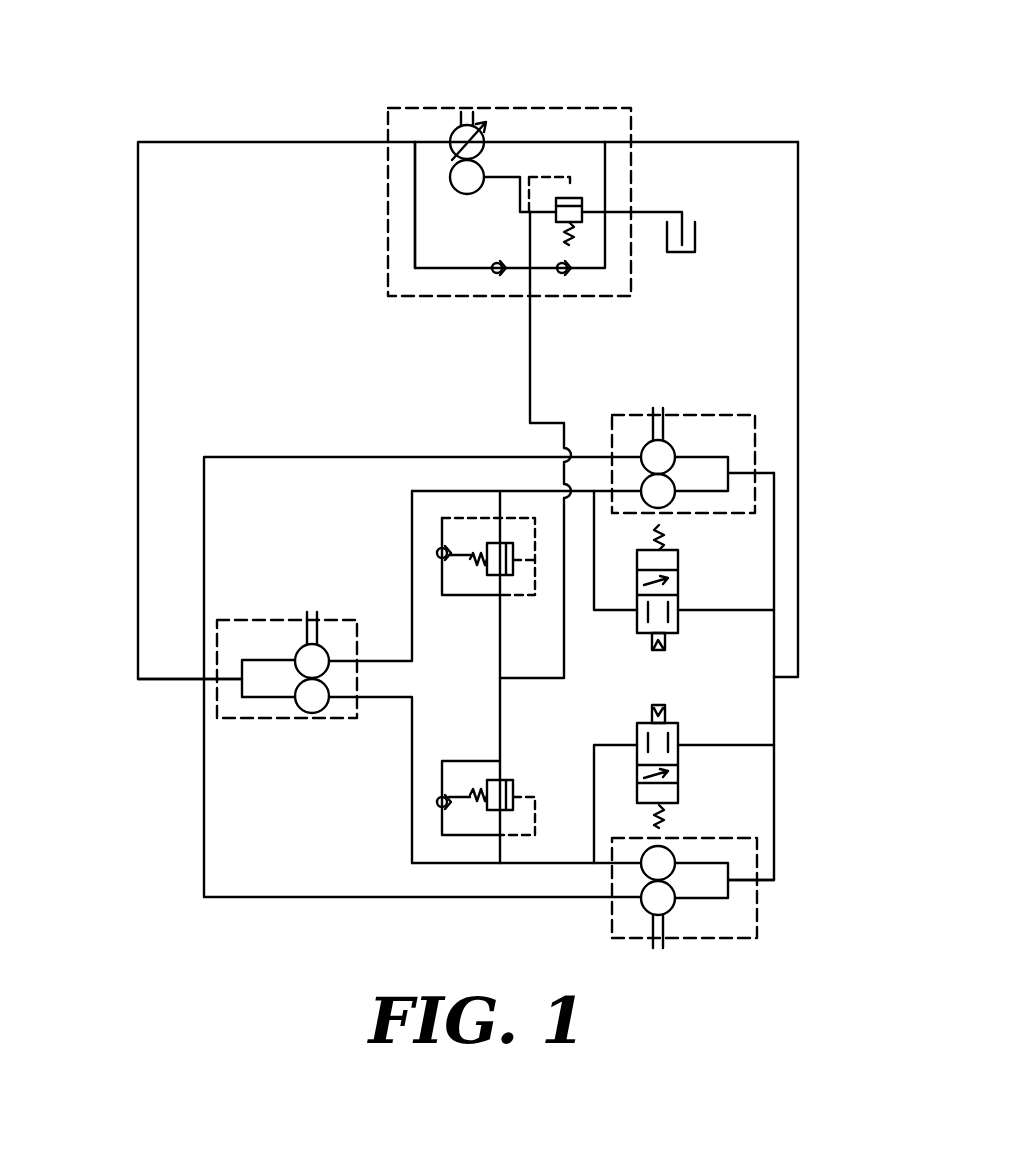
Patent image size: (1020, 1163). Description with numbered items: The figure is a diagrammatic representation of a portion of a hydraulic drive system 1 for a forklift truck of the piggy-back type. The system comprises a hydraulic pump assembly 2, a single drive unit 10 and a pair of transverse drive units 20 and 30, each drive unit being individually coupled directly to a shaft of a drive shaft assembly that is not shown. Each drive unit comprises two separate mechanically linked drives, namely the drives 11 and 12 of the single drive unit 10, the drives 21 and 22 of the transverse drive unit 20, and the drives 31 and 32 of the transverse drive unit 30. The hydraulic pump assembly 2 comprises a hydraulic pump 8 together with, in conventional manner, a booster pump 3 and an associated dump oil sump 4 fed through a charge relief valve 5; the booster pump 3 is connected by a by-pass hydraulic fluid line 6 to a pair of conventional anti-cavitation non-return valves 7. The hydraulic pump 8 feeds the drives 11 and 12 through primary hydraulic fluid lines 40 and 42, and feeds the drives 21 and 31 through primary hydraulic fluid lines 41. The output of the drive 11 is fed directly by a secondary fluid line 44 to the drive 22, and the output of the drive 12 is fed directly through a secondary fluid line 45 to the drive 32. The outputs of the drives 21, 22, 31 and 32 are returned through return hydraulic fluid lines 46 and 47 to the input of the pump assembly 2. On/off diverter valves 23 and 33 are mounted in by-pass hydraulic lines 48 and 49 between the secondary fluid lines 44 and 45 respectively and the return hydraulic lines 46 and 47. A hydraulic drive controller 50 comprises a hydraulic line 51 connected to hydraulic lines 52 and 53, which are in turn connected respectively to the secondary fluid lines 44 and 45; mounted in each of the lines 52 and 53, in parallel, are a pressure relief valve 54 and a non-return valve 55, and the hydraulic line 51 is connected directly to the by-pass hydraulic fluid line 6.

The hydraulic drive system 1 is at (725, 102).
The hydraulic pump assembly 2 is at (378, 97).
The booster pump 3 is at (455, 177).
The dump oil sump 4 is at (695, 233).
The charge relief valve 5 is at (565, 195).
The by-pass hydraulic fluid line 6 is at (415, 247).
The anti-cavitation non-return valves 7 is at (568, 268).
The hydraulic pump 8 is at (490, 124).
The single drive unit 10 is at (275, 612).
The drive 11 is at (300, 647).
The drive 12 is at (297, 688).
The transverse drive unit 20 is at (708, 400).
The drive 21 is at (672, 445).
The drive 22 is at (672, 490).
The on/off diverter valve 23 is at (662, 597).
The transverse drive unit 30 is at (763, 847).
The drive 31 is at (672, 890).
The drive 32 is at (672, 855).
The on/off diverter valve 33 is at (678, 773).
The primary hydraulic fluid line 40 is at (138, 200).
The primary hydraulic fluid lines 41 is at (335, 457).
The primary hydraulic fluid line 42 is at (203, 679).
The secondary fluid line 44 is at (412, 503).
The secondary fluid line 45 is at (553, 863).
The return hydraulic fluid line 46 is at (775, 547).
The return hydraulic fluid line 47 is at (798, 178).
The by-pass hydraulic line 48 is at (613, 613).
The by-pass hydraulic line 49 is at (594, 768).
The hydraulic drive controller 50 is at (430, 841).
The hydraulic line 51 is at (532, 357).
The hydraulic line 52 is at (502, 607).
The hydraulic line 53 is at (500, 748).
The pressure relief valve 54 is at (490, 543).
The non-return valve 55 is at (437, 553).